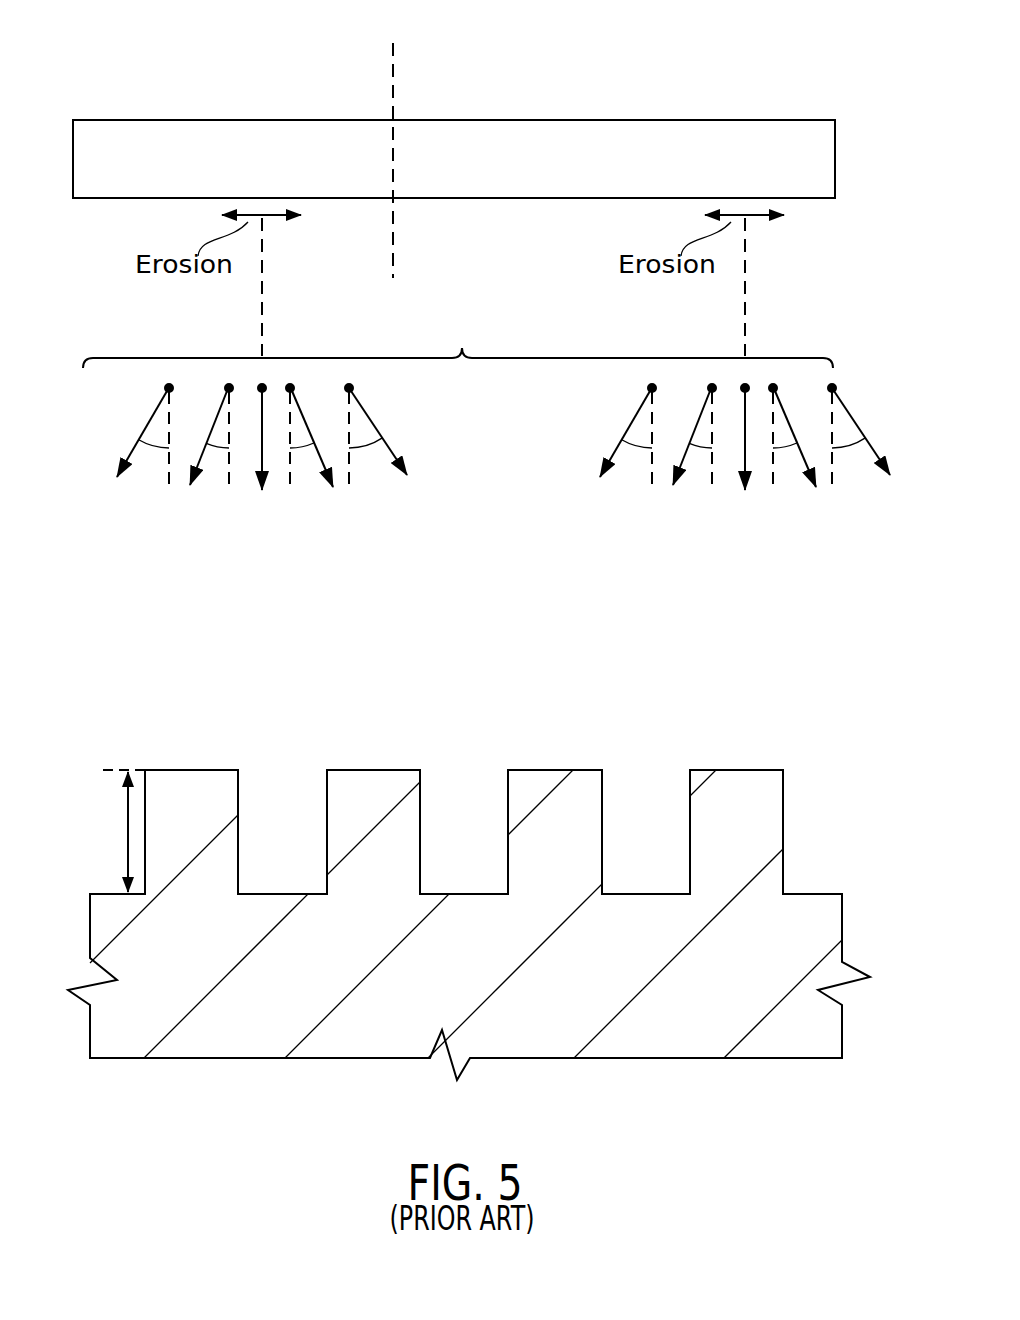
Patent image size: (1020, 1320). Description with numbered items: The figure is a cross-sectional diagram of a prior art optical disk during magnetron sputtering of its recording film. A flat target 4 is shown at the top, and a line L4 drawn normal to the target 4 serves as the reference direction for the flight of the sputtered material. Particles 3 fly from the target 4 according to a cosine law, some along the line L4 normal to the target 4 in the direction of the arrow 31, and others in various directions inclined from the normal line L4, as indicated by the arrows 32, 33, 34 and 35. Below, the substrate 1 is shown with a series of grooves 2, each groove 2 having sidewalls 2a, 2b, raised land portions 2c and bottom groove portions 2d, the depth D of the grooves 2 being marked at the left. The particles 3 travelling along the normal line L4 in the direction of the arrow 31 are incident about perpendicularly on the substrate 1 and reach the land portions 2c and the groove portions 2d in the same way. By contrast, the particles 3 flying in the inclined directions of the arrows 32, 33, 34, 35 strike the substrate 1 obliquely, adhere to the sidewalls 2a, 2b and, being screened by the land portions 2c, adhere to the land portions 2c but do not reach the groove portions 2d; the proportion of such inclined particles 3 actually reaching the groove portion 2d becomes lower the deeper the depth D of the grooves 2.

The substrate 1 is at (655, 1023).
The groove 2 is at (640, 773).
The sidewall 2a is at (428, 792).
The sidewall 2b is at (503, 790).
The land portion 2c is at (192, 770).
The groove portion 2d is at (282, 894).
The particles 3 is at (507, 448).
The arrow 31 is at (263, 495).
The arrow 32 is at (115, 482).
The arrow 33 is at (188, 490).
The arrow 34 is at (333, 492).
The arrow 35 is at (408, 480).
The target 4 is at (173, 120).
The normal line L4 is at (393, 72).
The depth D is at (123, 831).